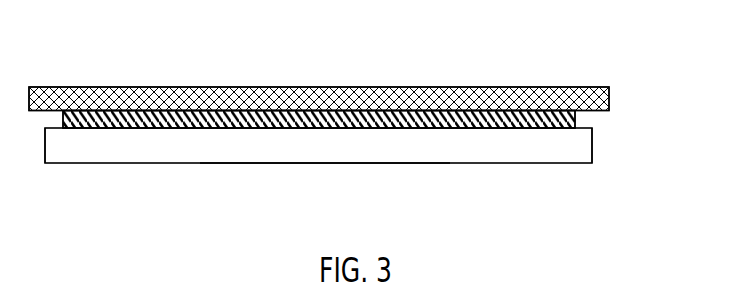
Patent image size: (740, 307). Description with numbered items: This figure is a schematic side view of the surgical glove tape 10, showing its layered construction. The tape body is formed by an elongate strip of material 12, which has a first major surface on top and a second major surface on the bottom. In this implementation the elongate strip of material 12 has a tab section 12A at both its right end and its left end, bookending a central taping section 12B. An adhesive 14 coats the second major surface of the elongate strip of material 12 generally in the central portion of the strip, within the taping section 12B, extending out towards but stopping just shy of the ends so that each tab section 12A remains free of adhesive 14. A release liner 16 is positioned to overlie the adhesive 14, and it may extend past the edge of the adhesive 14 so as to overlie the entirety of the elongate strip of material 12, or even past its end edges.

The surgical glove tape 10 is at (70, 32).
The elongate strip of material 12 is at (592, 145).
The tab section 12A is at (63, 168).
The taping section 12B is at (337, 173).
The adhesive 14 is at (575, 120).
The release liner 16 is at (609, 96).